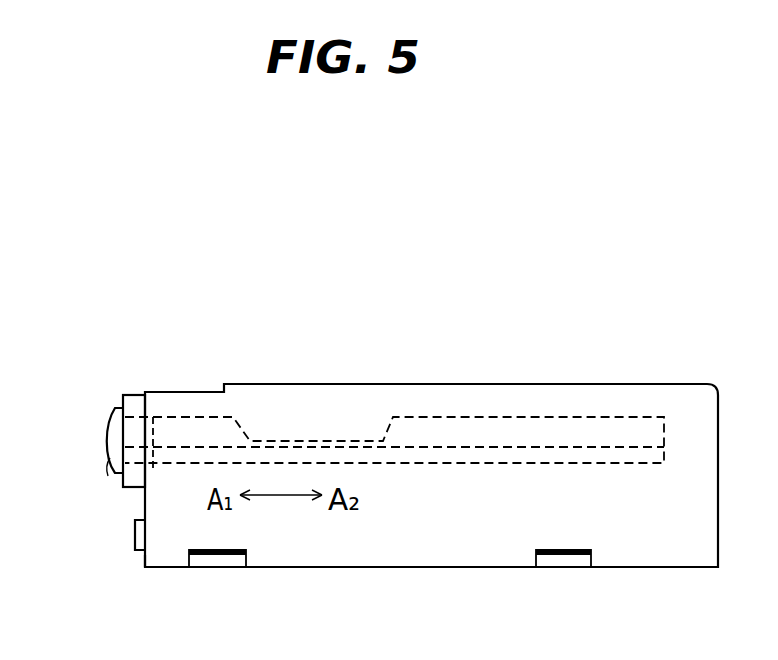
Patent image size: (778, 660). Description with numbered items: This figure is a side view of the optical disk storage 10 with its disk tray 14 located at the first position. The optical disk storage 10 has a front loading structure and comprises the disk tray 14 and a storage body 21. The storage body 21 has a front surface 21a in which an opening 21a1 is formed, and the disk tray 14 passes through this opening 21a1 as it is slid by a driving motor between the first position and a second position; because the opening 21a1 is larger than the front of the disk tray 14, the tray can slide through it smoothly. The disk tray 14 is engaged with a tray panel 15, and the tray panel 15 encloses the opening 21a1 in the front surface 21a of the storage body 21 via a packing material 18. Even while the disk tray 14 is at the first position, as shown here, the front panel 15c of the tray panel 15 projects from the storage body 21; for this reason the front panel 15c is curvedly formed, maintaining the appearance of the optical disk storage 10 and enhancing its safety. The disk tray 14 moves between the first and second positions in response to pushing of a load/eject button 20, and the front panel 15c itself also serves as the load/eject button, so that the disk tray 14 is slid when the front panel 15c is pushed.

The optical disk storage 10 is at (294, 271).
The disk tray 14 is at (424, 416).
The tray panel 15 is at (113, 440).
The front panel 15c is at (110, 460).
The packing material 18 is at (133, 394).
The load/eject button 20 is at (134, 538).
The storage body 21 is at (588, 382).
The front surface 21a is at (143, 560).
The opening 21a1 is at (158, 420).